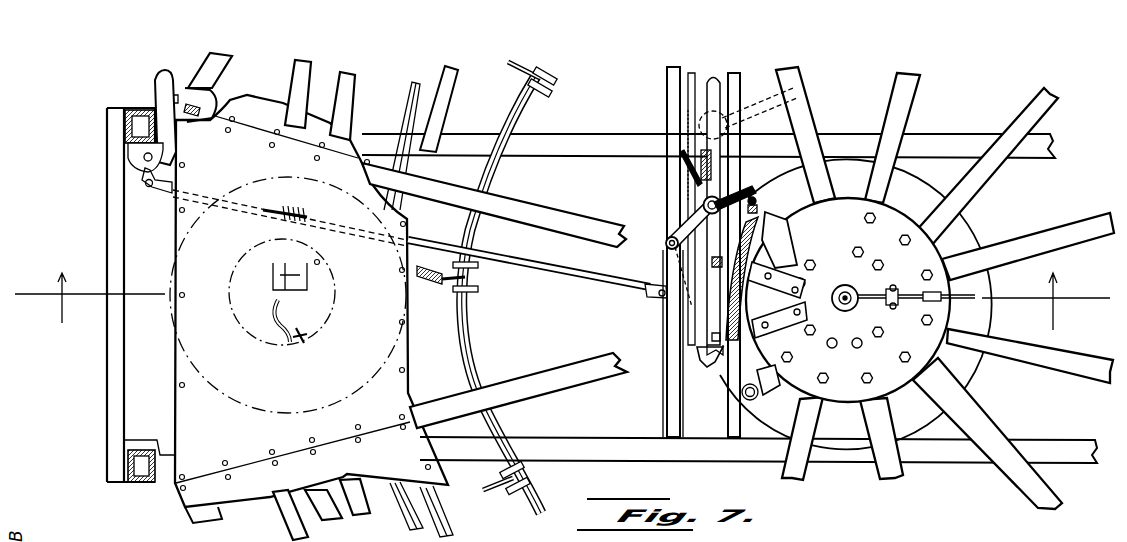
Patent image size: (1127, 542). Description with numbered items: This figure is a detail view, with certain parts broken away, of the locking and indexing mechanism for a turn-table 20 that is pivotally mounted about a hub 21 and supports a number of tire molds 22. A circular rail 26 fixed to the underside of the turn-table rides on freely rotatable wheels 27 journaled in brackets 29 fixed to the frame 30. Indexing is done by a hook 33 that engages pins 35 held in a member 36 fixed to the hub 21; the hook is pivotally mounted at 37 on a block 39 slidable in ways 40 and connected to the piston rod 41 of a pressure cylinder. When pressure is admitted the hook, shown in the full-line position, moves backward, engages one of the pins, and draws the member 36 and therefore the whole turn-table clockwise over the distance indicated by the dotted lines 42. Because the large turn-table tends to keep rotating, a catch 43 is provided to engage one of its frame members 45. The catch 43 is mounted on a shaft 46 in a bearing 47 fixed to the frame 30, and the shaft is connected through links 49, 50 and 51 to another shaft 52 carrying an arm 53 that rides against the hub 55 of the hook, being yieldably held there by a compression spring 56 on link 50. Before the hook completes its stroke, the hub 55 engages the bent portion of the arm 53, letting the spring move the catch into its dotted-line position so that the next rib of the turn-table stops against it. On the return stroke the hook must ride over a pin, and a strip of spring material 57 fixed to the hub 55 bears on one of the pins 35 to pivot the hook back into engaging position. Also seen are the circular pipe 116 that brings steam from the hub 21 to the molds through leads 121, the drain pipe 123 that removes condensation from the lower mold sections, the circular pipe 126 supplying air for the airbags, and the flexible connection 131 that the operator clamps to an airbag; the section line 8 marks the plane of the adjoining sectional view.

The section line 8- 8 is at (562, 309).
The turn-table 20 is at (187, 412).
The hub 21 is at (845, 285).
The tire molds 22 is at (250, 360).
The circular rail 26 is at (330, 88).
The wheels 27 is at (252, 257).
The brackets 29 is at (307, 298).
The frame 30 is at (250, 225).
The hook 33 is at (705, 367).
The pins 35 is at (780, 220).
The member 36 is at (960, 230).
The pivot 37 is at (705, 203).
The block 39 is at (712, 185).
The ways 40 is at (740, 95).
The piston rod 41 is at (687, 98).
The dotted lines 42 is at (740, 273).
The catch 43 is at (177, 130).
The frame members 45 is at (215, 100).
The shaft 46 is at (130, 157).
The bearing 47 is at (125, 145).
The link 49 is at (143, 175).
The link 50 is at (537, 267).
The link 51 is at (657, 273).
The shaft 52 is at (666, 238).
The arm 53 is at (680, 168).
The hub of the hook 55 is at (727, 180).
The compression spring 56 is at (297, 203).
The strip of spring material 57 is at (800, 90).
The circular pipe 116 is at (477, 347).
The leads 121 is at (513, 73).
The drain pipe 123 is at (453, 517).
The circular pipe 126 is at (400, 518).
The flexible connection 131 is at (267, 320).